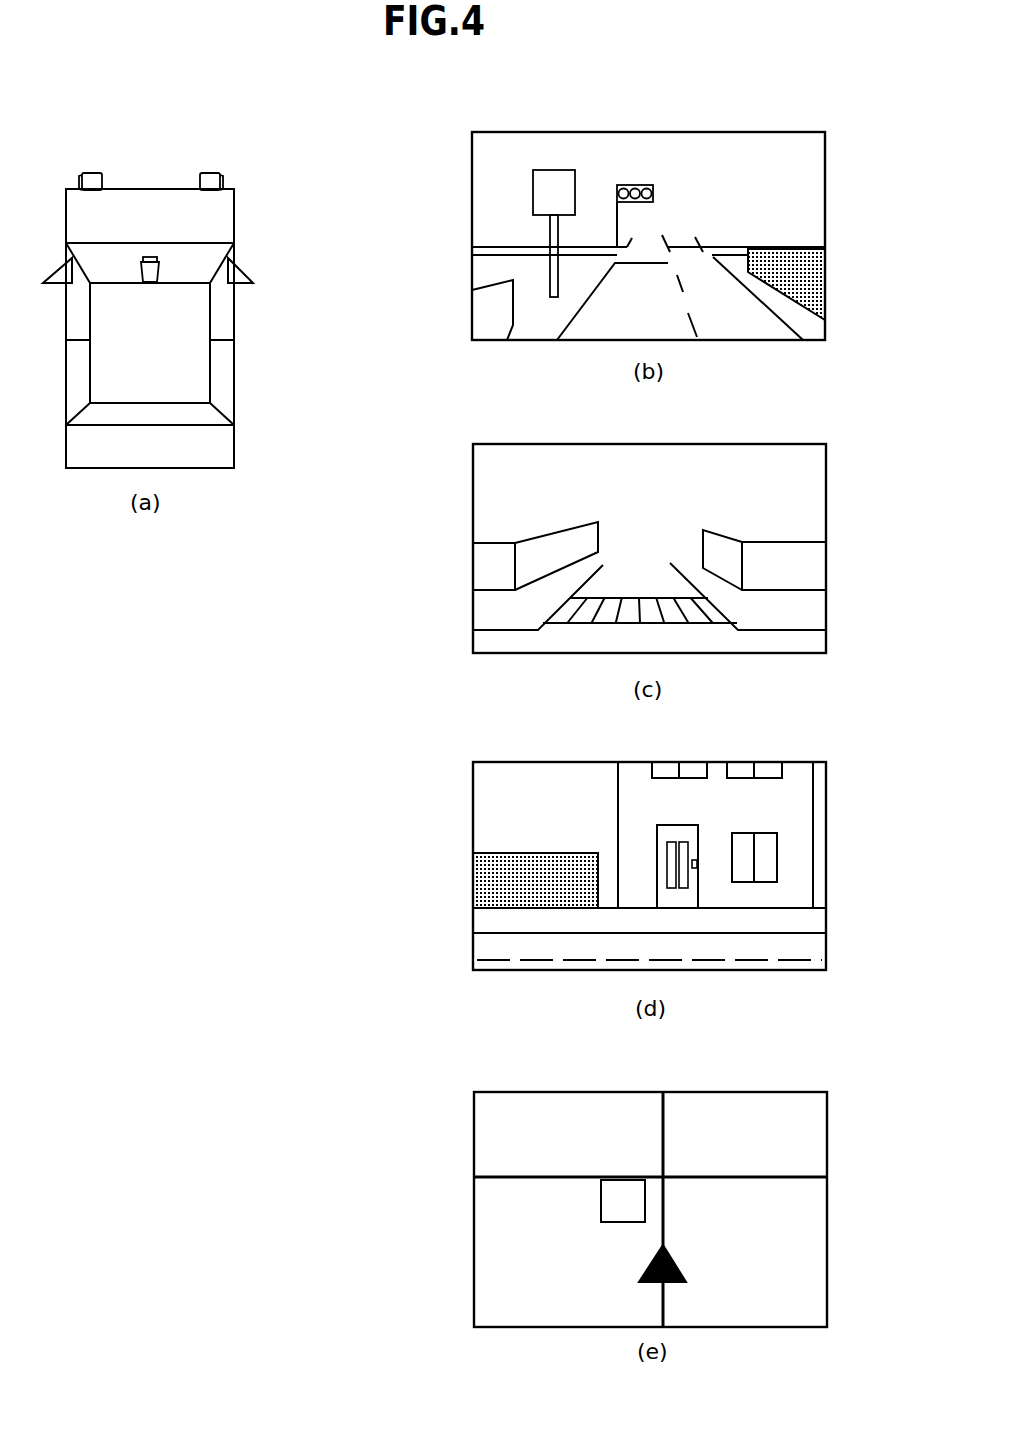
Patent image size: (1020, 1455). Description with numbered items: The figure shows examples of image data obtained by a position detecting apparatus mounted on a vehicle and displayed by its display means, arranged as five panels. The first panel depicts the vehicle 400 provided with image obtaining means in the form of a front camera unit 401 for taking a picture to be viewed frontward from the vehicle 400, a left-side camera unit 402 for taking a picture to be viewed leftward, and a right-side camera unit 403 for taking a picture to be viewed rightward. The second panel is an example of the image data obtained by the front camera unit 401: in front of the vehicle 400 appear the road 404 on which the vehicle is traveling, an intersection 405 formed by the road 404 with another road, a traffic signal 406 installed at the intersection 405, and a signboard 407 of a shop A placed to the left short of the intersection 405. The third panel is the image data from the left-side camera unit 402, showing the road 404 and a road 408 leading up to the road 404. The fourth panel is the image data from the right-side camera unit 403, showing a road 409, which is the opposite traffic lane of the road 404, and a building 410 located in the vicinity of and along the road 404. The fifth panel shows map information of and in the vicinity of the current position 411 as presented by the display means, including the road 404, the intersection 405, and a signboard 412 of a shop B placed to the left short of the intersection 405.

The vehicle 400 is at (192, 355).
The front camera unit 401 is at (162, 273).
The left-side camera unit 402 is at (87, 172).
The right-side camera unit 403 is at (208, 172).
The road 404 is at (595, 328).
The intersection 405 is at (700, 247).
The traffic signal 406 is at (630, 185).
The signboard 407 is at (533, 173).
The road 408 is at (640, 572).
The road 409 is at (480, 950).
The building 410 is at (805, 807).
The current position 411 is at (683, 1272).
The signboard 412 is at (602, 1198).